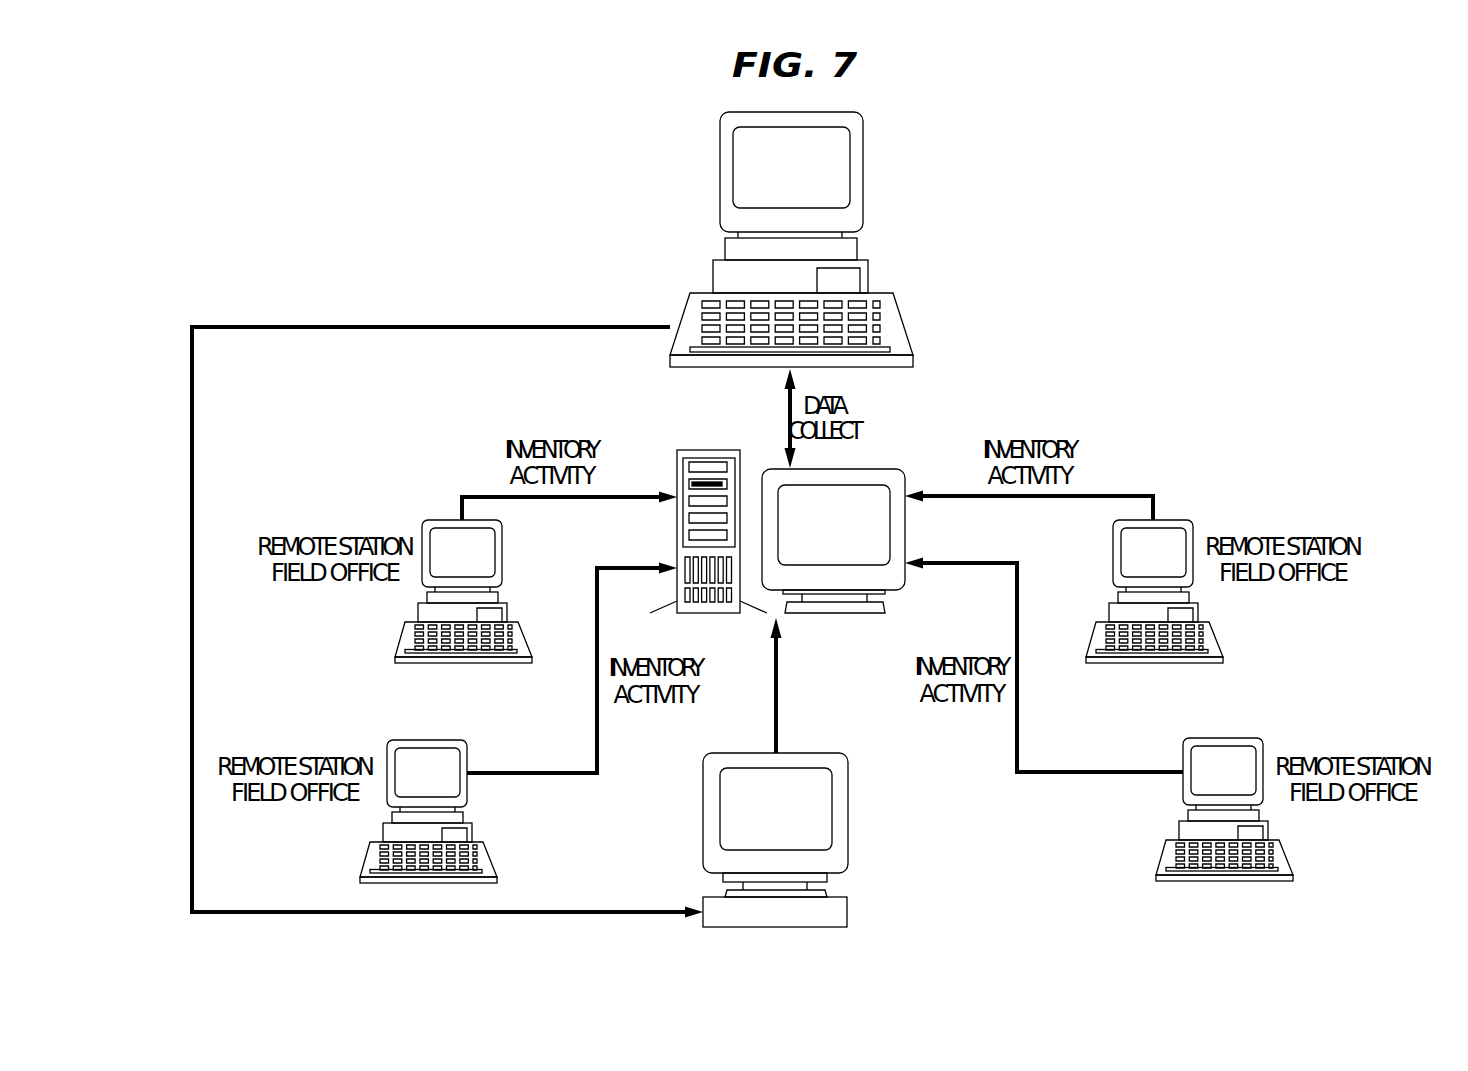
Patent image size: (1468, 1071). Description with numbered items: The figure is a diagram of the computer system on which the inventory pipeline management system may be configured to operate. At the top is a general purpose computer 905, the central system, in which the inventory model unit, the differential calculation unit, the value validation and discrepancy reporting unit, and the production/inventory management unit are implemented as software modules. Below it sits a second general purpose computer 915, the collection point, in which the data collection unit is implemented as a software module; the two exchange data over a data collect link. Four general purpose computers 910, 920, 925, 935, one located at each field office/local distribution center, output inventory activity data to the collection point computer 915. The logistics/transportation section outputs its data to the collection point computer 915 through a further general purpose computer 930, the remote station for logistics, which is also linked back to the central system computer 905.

The general purpose computer 905 is at (863, 178).
The general purpose computer 910 is at (442, 520).
The general purpose computer 915 is at (878, 468).
The general purpose computer 920 is at (1173, 520).
The general purpose computer 925 is at (408, 740).
The general purpose computer 930 is at (808, 753).
The general purpose computer 935 is at (1238, 738).